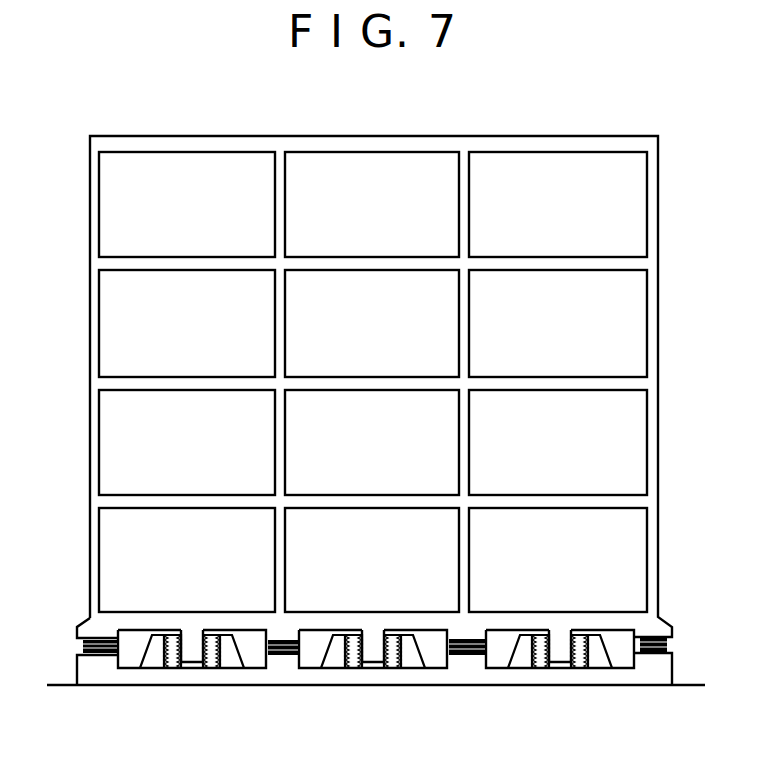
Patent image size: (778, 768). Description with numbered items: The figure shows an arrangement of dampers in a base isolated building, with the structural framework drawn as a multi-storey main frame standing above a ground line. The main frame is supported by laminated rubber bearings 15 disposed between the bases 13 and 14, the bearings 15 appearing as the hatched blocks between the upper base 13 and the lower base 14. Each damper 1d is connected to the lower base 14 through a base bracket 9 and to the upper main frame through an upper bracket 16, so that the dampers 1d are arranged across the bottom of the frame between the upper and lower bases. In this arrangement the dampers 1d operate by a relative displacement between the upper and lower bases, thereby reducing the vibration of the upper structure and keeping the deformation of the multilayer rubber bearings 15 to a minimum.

The base 13 is at (87, 620).
The base 14 is at (100, 670).
The laminated rubber bearings 15 is at (83, 647).
The upper bracket 16 is at (190, 640).
The base bracket 9 is at (152, 658).
The damper 1d is at (205, 653).